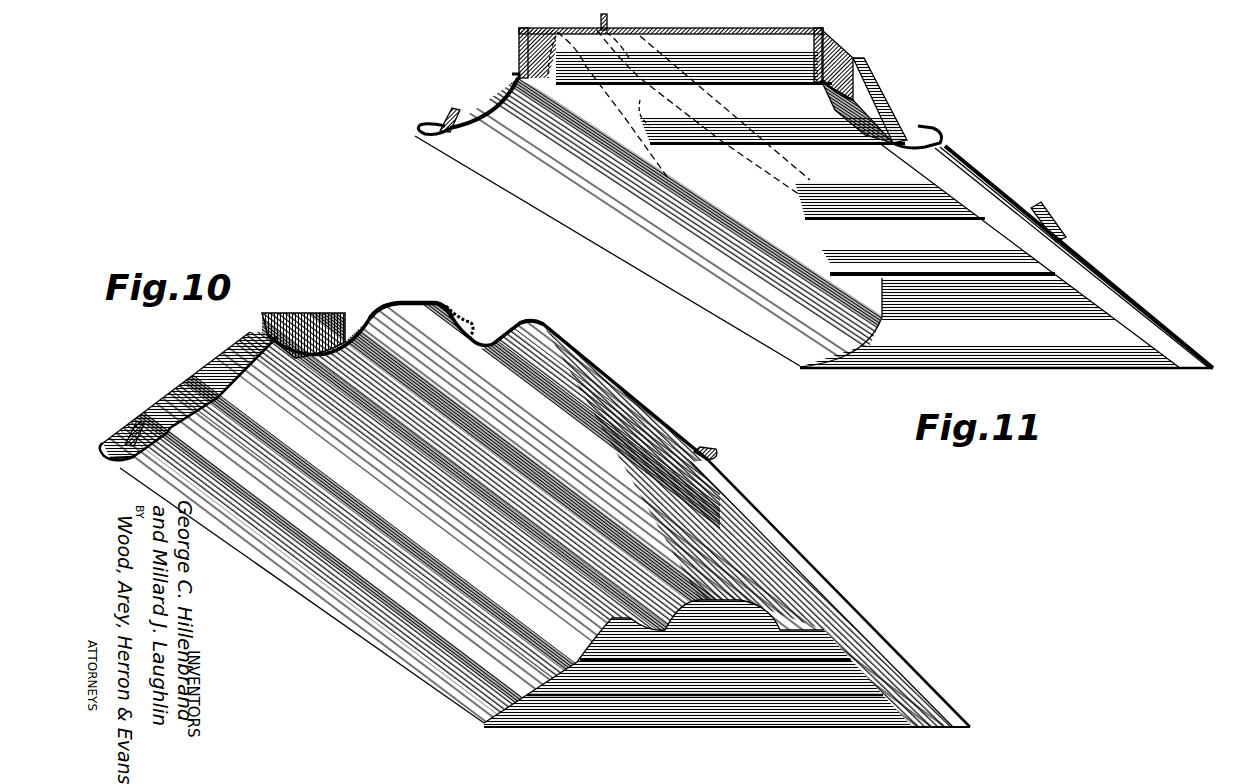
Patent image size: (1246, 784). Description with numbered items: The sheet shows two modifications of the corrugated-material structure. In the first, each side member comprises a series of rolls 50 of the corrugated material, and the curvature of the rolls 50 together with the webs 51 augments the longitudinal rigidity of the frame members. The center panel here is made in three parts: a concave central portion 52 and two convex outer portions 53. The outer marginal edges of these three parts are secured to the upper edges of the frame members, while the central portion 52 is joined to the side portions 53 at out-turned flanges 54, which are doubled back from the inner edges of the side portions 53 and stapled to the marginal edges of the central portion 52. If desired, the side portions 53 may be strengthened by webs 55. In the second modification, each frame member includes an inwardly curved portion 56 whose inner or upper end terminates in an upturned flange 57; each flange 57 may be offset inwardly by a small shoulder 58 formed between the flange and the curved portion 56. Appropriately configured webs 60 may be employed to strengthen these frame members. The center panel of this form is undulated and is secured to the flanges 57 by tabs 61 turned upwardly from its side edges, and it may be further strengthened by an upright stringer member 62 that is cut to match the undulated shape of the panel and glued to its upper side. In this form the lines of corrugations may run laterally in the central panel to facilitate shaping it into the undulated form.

In FIG. 10, the rolls of corrugated material 50 is at (720, 490).
In FIG. 10, the webs 51 is at (192, 383).
In FIG. 10, the central portion 52 is at (428, 298).
In FIG. 10, the outer portions 53 is at (318, 308).
In FIG. 10, the out-turned flanges 54 is at (467, 309).
In FIG. 10, the webs 55 is at (336, 316).
In FIG. 11, the inwardly curved portion 56 is at (497, 112).
In FIG. 11, the upturned flanges 57 is at (519, 44).
In FIG. 11, the shoulder 58 is at (513, 72).
In FIG. 11, the webs 60 is at (885, 87).
In FIG. 11, the tabs 61 is at (560, 22).
In FIG. 11, the upright stringer member 62 is at (608, 27).